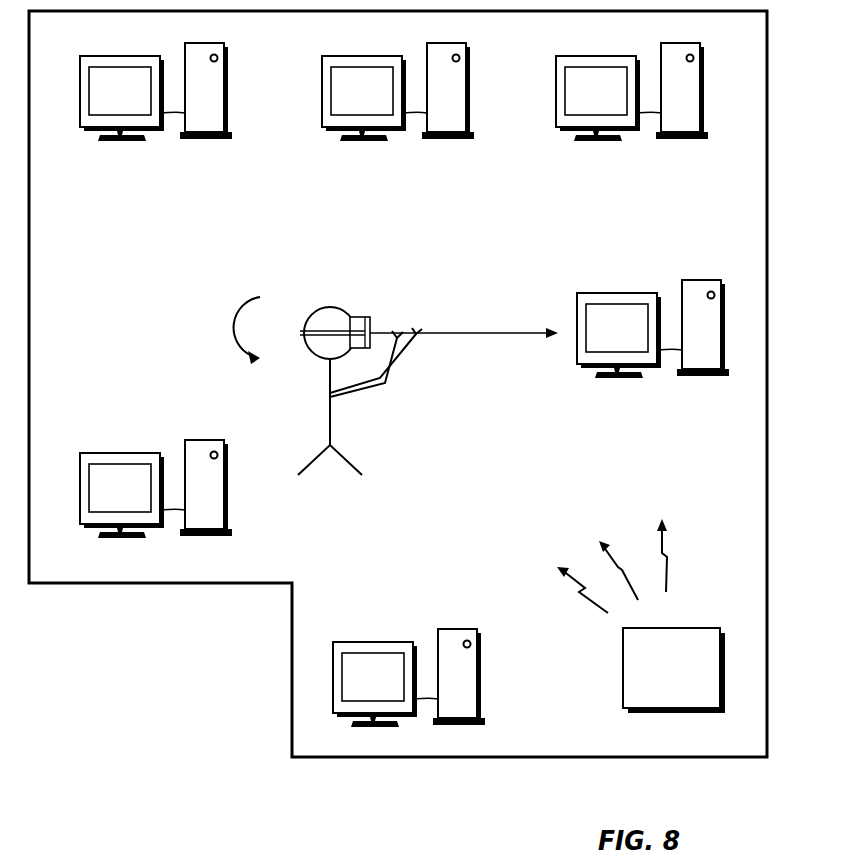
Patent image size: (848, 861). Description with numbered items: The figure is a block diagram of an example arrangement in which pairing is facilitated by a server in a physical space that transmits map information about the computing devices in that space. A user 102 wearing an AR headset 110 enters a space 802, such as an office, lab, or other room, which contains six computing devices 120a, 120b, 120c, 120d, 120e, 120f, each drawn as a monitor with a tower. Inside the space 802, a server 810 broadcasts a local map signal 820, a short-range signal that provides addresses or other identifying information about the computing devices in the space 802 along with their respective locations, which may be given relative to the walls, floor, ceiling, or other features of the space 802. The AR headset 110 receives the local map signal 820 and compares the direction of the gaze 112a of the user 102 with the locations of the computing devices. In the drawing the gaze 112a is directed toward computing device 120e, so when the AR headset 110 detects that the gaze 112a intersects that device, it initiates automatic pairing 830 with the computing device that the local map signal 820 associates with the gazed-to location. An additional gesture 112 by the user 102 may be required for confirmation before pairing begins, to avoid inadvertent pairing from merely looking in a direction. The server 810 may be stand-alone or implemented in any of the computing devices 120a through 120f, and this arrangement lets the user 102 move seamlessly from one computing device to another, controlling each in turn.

The computing device 120a is at (145, 106).
The computing device 120b is at (387, 106).
The computing device 120c is at (621, 106).
The computing device 120d is at (145, 503).
The computing device 120e is at (642, 343).
The computing device 120f is at (398, 692).
The AR headset 110 is at (358, 317).
The user 102 is at (330, 380).
The gesture 112 is at (410, 358).
The gaze 112a is at (545, 315).
The automatic pairing upon gaze and/or gesture 830 is at (181, 315).
The local map signal 820 is at (650, 496).
The space 802 is at (75, 583).
The server 810 is at (653, 691).